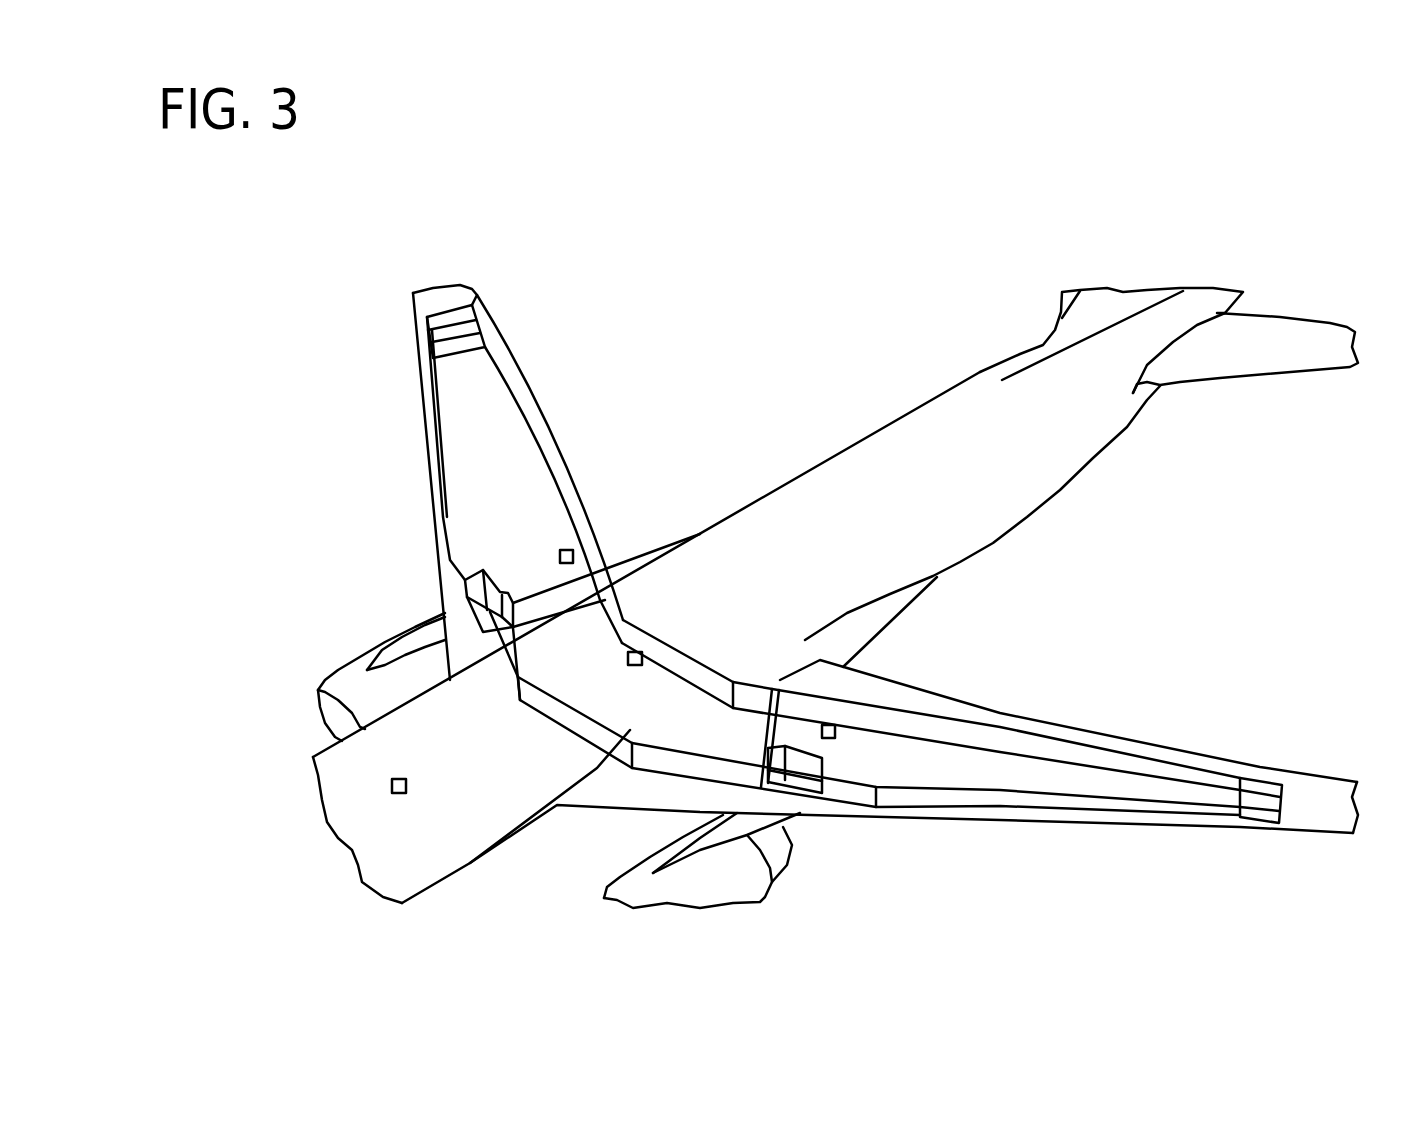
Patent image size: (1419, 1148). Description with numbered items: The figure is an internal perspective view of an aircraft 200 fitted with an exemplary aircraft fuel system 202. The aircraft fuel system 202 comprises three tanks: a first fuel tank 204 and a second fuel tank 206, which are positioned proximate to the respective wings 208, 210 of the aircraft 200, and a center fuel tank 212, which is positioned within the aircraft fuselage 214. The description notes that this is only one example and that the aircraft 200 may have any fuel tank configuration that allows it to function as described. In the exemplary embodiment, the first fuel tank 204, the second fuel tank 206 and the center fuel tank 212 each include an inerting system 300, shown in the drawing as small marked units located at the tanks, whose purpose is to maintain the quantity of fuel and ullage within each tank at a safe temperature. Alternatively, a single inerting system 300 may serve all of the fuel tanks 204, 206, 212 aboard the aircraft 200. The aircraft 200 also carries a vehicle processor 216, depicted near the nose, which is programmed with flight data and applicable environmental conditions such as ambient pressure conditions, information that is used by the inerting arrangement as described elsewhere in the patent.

The aircraft 200 is at (794, 330).
The aircraft fuel system 202 is at (384, 485).
The first fuel tank 204 is at (464, 438).
The second fuel tank 206 is at (937, 750).
The wing 208 is at (413, 343).
The wing 210 is at (1150, 744).
The center fuel tank 212 is at (601, 770).
The aircraft fuselage 214 is at (846, 448).
The vehicle processor 216 is at (398, 793).
The inerting system 300 is at (823, 724).